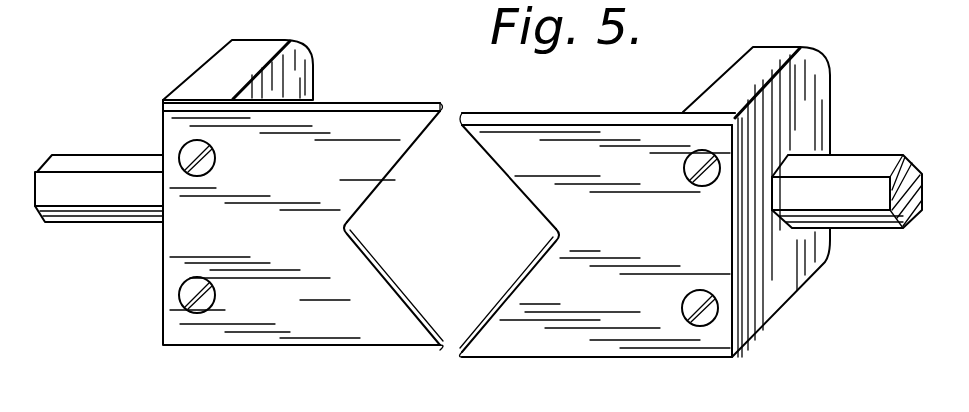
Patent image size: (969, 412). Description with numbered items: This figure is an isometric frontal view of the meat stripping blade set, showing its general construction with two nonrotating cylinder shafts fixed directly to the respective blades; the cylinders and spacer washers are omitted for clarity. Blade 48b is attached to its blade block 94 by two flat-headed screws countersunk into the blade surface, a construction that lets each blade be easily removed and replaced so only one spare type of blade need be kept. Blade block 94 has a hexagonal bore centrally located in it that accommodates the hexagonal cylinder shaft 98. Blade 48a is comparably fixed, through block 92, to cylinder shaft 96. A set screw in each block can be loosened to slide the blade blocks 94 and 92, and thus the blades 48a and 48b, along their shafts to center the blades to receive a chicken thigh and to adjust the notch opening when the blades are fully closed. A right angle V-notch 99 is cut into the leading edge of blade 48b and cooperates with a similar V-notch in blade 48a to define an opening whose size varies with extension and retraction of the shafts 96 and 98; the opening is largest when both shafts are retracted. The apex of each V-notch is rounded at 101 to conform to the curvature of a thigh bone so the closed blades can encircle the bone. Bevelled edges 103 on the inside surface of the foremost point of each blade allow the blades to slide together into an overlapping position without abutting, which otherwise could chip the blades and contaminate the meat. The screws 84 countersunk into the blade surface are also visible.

The blade 48a is at (313, 331).
The blade 48b is at (597, 343).
The screw 84 is at (706, 318).
The blade block 92 is at (297, 69).
The blade block 94 is at (817, 76).
The cylinder shaft 96 is at (100, 213).
The hexagonal cylinder shaft 98 is at (878, 217).
The V-notch 99 is at (502, 160).
The rounded apex 101 is at (560, 232).
The bevelled edges 103 is at (462, 112).